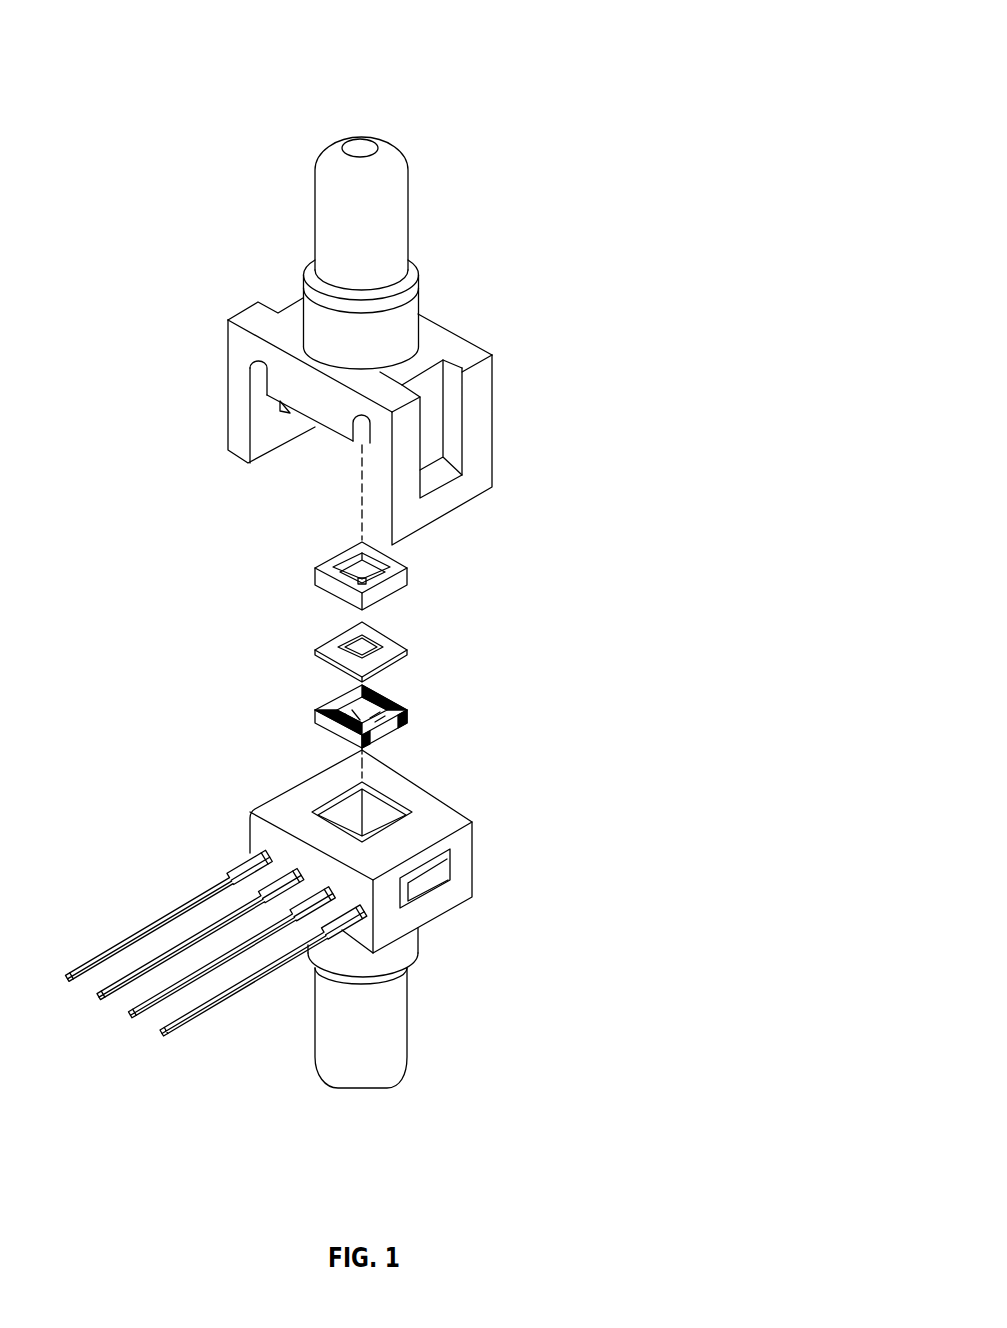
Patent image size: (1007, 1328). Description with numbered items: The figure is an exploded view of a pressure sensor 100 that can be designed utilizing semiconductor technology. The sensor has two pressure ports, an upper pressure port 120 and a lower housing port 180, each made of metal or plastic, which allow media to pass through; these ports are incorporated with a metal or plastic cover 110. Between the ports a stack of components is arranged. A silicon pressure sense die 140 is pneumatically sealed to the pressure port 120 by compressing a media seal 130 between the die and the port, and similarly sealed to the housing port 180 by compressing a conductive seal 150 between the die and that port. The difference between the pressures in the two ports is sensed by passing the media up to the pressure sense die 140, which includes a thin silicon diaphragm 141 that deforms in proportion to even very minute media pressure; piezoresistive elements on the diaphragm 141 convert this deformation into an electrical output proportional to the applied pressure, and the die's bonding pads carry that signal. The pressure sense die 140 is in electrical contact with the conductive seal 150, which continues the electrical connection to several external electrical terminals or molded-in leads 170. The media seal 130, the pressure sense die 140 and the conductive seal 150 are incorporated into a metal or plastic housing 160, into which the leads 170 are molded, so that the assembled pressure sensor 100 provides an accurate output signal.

The pressure sensor 100 is at (573, 78).
The cover 110 is at (413, 166).
The pressure port 120 is at (414, 252).
The media seal 130 is at (418, 572).
The pressure sense die 140 is at (318, 647).
The diaphragm 141 is at (364, 653).
The conductive seal 150 is at (390, 737).
The housing 160 is at (476, 853).
The leads 170 is at (154, 1038).
The pressure port 180 is at (407, 1012).